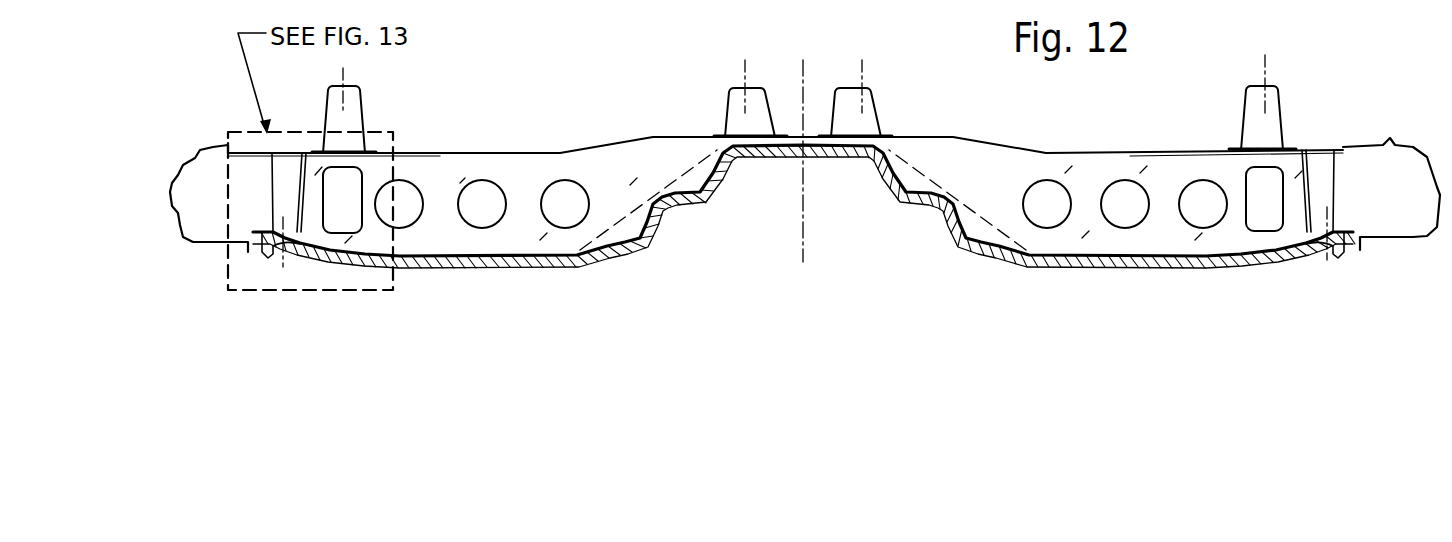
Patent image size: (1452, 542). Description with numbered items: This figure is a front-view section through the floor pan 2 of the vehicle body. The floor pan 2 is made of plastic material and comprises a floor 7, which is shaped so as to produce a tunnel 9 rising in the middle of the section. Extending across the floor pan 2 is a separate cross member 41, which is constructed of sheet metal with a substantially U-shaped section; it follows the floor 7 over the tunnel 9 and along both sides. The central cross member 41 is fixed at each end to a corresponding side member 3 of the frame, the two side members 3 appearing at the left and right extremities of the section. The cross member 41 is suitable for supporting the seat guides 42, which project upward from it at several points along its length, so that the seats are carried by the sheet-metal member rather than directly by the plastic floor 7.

The floor pan 2 is at (860, 242).
The side members 3 is at (191, 142).
The floor 7 is at (528, 270).
The tunnel 9 is at (786, 158).
The separate cross member 41 is at (1064, 166).
The seat guides 42 is at (362, 120).